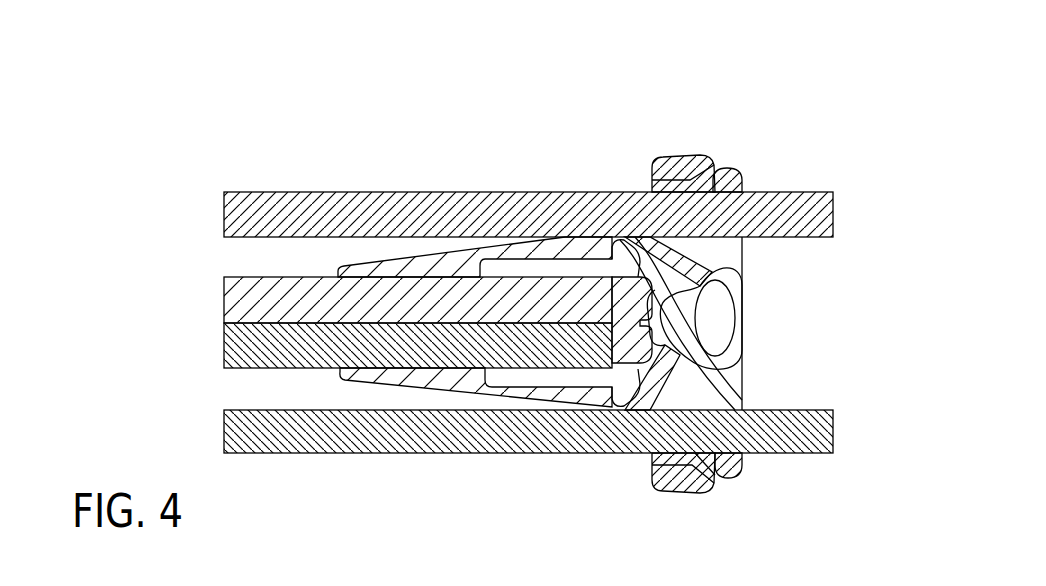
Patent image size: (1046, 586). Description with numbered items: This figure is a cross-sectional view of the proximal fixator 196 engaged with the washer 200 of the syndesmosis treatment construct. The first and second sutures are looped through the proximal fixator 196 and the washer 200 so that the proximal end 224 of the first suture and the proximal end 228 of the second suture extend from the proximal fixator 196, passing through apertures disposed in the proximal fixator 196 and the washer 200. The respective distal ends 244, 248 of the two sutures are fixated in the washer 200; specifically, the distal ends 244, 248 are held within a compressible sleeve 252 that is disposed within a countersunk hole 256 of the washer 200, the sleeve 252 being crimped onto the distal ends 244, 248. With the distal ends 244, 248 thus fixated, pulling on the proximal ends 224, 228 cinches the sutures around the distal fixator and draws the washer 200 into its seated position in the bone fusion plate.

The proximal fixator 196 is at (744, 170).
The washer 200 is at (686, 156).
The proximal end of the first suture 224 is at (533, 212).
The proximal end of the second suture 228 is at (600, 438).
The distal end of the first suture 244 is at (315, 305).
The distal end of the second suture 248 is at (292, 348).
The compressible sleeve 252 is at (483, 262).
The countersunk hole 256 is at (462, 372).